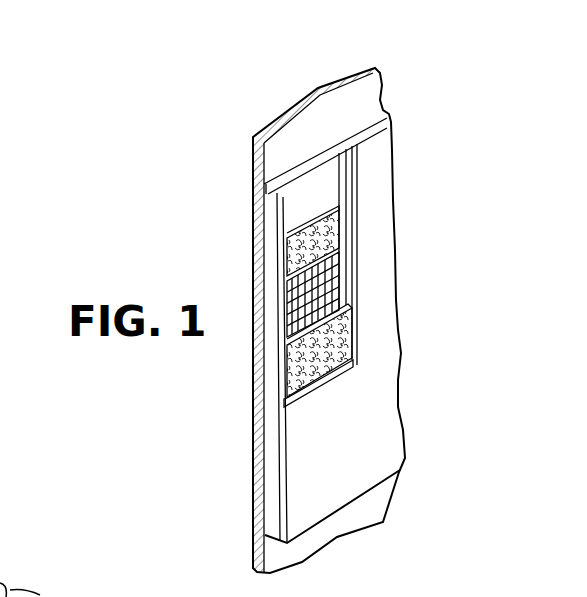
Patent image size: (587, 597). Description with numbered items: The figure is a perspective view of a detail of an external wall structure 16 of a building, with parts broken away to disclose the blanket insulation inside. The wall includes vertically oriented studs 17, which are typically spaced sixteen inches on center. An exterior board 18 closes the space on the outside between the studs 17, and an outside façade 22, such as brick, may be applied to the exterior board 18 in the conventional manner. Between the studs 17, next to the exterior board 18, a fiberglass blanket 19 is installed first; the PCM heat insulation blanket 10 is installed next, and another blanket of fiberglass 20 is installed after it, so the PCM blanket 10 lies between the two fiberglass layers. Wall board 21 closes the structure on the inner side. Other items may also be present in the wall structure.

The external wall structure 16 is at (231, 150).
The studs 17 is at (343, 180).
The exterior board 18 is at (360, 103).
The fiberglass blanket 19 is at (340, 232).
The PCM heat insulation blanket 10 is at (333, 290).
The blanket of fiberglass 20 is at (343, 337).
The wall board 21 is at (366, 448).
The outside façade 22 is at (256, 271).